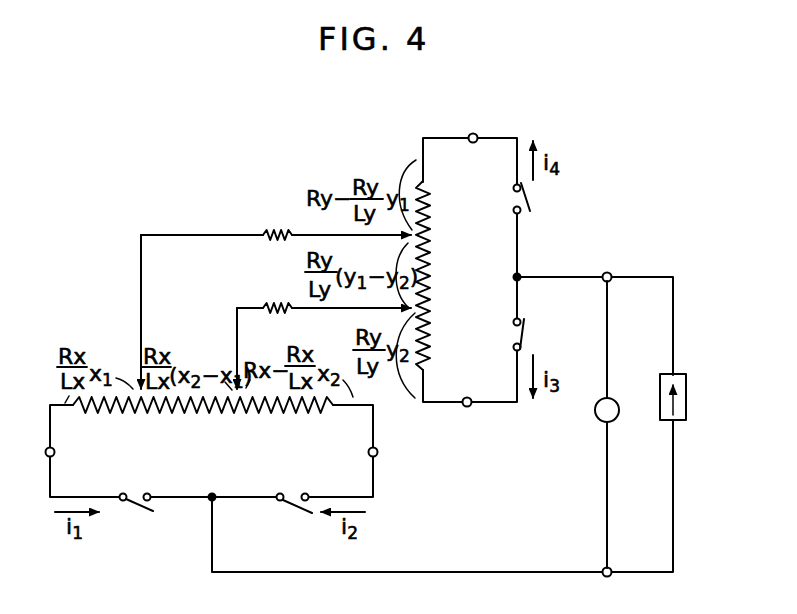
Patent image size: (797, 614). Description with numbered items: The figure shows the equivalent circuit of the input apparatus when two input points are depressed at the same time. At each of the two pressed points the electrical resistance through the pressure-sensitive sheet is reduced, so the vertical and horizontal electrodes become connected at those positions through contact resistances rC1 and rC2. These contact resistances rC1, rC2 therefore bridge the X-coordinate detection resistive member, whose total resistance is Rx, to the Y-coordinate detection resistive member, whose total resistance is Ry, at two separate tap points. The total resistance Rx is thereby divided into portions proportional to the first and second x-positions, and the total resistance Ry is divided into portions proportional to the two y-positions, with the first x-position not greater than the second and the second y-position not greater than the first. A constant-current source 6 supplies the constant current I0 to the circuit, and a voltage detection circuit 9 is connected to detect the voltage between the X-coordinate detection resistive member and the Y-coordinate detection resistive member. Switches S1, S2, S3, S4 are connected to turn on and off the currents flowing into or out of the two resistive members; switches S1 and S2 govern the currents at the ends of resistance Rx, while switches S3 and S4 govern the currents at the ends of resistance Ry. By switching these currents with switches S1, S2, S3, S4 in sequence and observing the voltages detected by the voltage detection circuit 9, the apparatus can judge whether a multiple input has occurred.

The constant-current source 6 is at (690, 383).
The voltage detection circuit 9 is at (596, 413).
The total resistance of the X-coordinate detection resistive member Rx is at (333, 415).
The total resistance of the Y-coordinate detection resistive member Ry is at (433, 173).
The switch S1 is at (135, 516).
The switch S2 is at (295, 516).
The switch S3 is at (538, 336).
The switch S4 is at (539, 199).
The contact resistance rC1 is at (276, 295).
The contact resistance rC2 is at (324, 333).
The current value of the constant-current source I0 is at (687, 377).